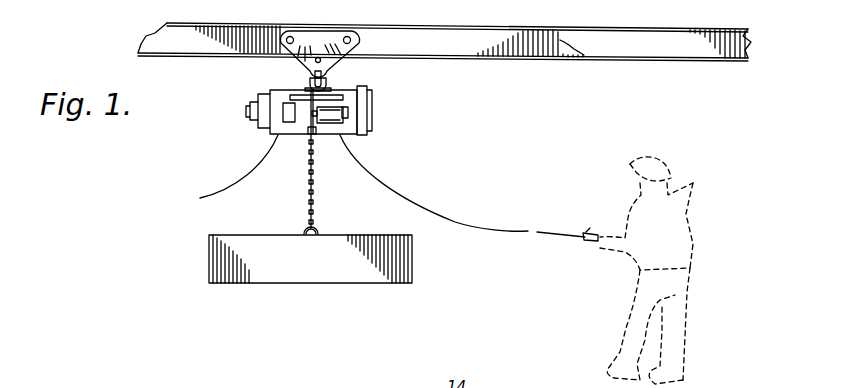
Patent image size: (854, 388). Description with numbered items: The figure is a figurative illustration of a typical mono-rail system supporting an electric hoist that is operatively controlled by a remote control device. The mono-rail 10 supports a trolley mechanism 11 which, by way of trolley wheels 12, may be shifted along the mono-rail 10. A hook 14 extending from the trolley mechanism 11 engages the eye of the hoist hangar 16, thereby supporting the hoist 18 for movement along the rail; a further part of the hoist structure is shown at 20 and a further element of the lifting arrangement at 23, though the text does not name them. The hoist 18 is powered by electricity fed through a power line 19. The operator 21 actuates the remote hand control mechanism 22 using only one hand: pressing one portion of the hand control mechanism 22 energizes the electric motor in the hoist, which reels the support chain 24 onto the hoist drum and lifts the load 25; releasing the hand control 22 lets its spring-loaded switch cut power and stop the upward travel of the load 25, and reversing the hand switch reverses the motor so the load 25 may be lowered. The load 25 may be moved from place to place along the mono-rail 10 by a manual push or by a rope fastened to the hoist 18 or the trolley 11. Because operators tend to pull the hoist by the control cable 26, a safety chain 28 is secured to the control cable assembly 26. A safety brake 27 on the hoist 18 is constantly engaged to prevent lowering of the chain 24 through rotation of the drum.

The mono-rail 10 is at (620, 50).
The trolley mechanism 11 is at (318, 52).
The trolley wheels 12 is at (270, 55).
The hook 14 is at (326, 80).
The hoist hangar 16 is at (332, 88).
The hoist 18 is at (270, 92).
The power line 19 is at (222, 192).
The control unit 20 is at (342, 128).
The operator 21 is at (686, 214).
The remote hand control mechanism 22 is at (582, 234).
The load hook 23 is at (320, 228).
The support chain 24 is at (307, 188).
The load 25 is at (223, 245).
The control cable 26 is at (457, 214).
The safety brake 27 is at (372, 118).
The safety chain 28 is at (405, 200).